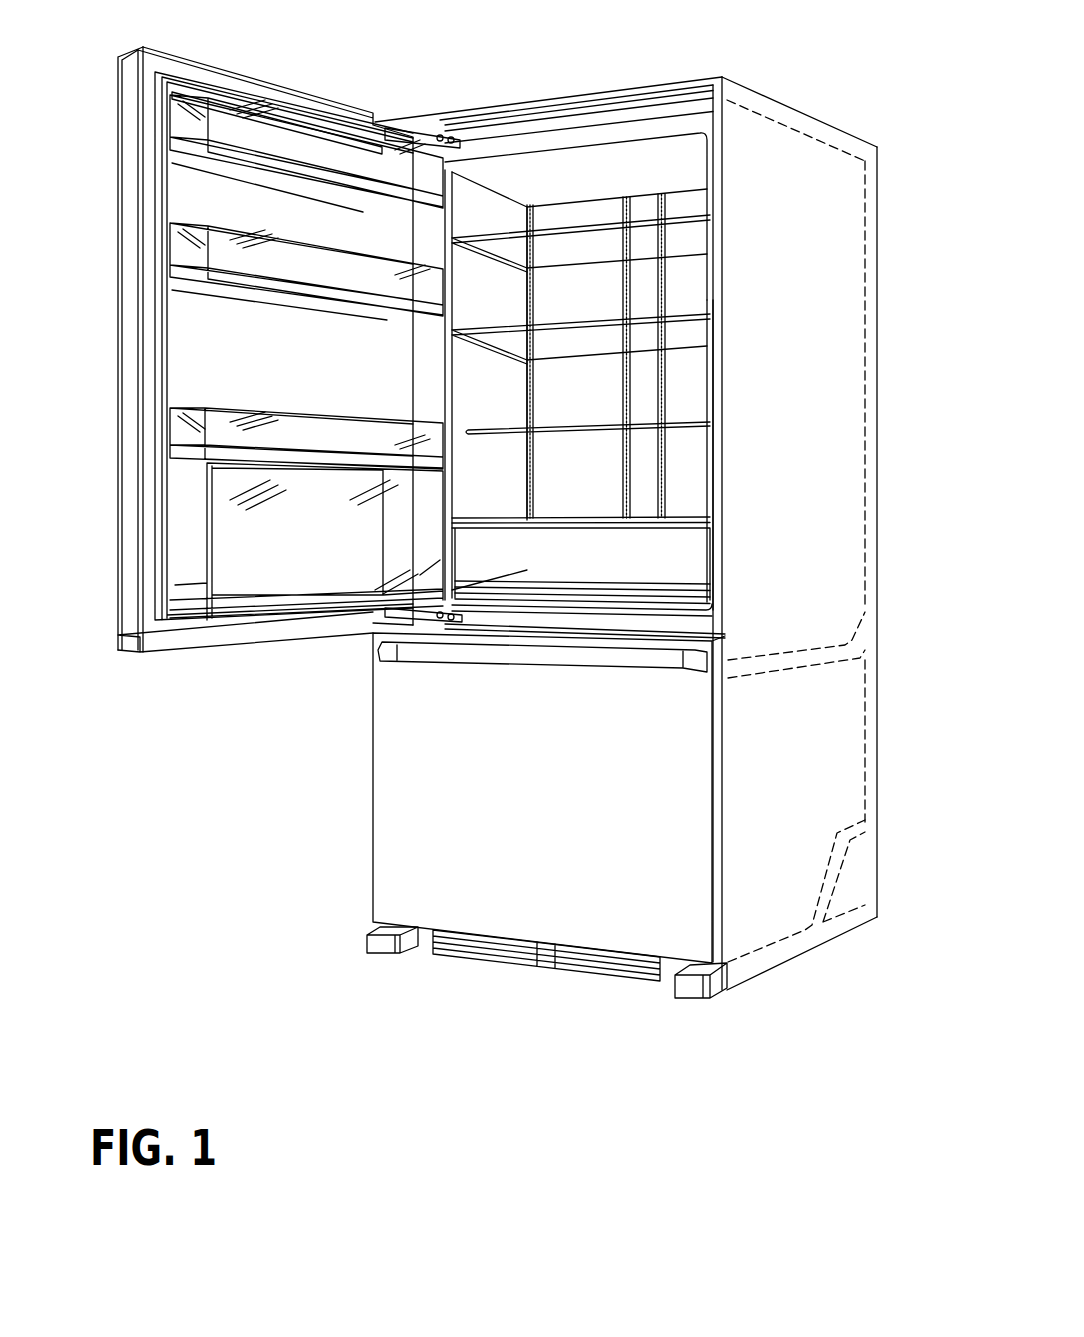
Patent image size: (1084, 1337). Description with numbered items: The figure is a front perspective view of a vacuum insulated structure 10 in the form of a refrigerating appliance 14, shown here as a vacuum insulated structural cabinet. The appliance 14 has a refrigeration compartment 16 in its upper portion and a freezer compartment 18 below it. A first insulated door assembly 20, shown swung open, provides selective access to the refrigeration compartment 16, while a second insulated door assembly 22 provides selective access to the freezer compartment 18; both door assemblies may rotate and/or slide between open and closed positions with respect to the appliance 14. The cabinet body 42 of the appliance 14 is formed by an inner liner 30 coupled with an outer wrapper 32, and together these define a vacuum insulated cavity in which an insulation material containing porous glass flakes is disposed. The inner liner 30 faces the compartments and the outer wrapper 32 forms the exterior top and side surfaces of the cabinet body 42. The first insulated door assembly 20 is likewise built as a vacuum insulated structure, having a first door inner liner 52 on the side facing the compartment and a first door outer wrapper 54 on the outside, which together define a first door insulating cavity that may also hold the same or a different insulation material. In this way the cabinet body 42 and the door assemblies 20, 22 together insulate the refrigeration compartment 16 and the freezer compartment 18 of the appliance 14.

The vacuum insulated structure 10 is at (621, 512).
The refrigerating appliance 14 is at (667, 512).
The refrigeration compartment 16 is at (696, 379).
The freezer compartment 18 is at (769, 897).
The first insulated door assembly 20 is at (253, 395).
The second insulated door assembly 22 is at (366, 767).
The inner liner 30 is at (602, 170).
The outer wrapper 32 is at (855, 137).
The cabinet body 42 is at (884, 558).
The first door inner liner 52 is at (152, 617).
The first door outer wrapper 54 is at (117, 480).